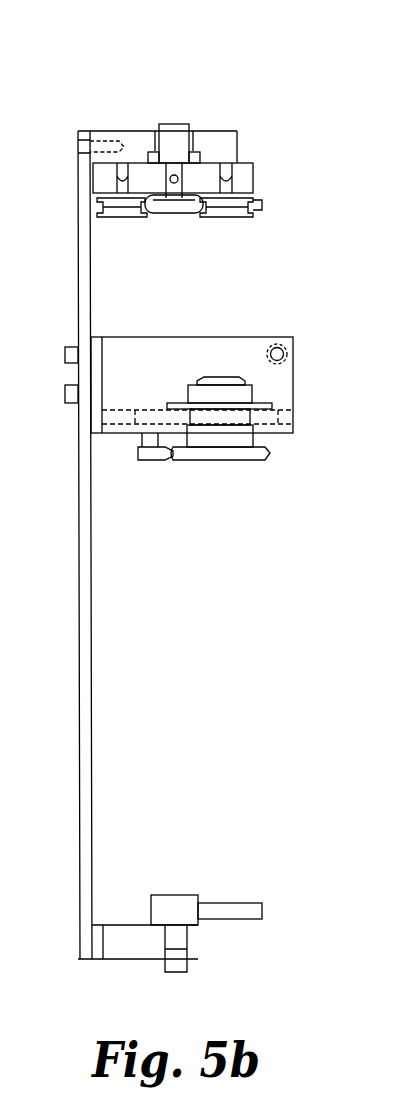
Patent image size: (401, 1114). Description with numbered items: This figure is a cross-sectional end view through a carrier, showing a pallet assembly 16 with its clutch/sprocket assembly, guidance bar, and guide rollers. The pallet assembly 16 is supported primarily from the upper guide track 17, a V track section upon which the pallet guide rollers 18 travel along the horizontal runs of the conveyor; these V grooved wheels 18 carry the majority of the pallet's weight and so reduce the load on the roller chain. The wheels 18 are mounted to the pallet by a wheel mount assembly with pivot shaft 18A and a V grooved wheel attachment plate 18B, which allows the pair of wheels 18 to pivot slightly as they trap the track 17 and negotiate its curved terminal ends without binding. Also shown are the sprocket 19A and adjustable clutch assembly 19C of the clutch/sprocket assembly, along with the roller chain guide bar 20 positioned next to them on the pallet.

The pallet assembly 16 is at (80, 652).
The upper guide track 17 is at (172, 213).
The pallet guide rollers 18 is at (118, 217).
The pivot shaft 18A is at (175, 124).
The V grooved wheel attachment plate 18B is at (253, 163).
The sprocket 19A is at (270, 458).
The adjustable clutch assembly 19C is at (234, 385).
The roller chain guide bar 20 is at (145, 460).